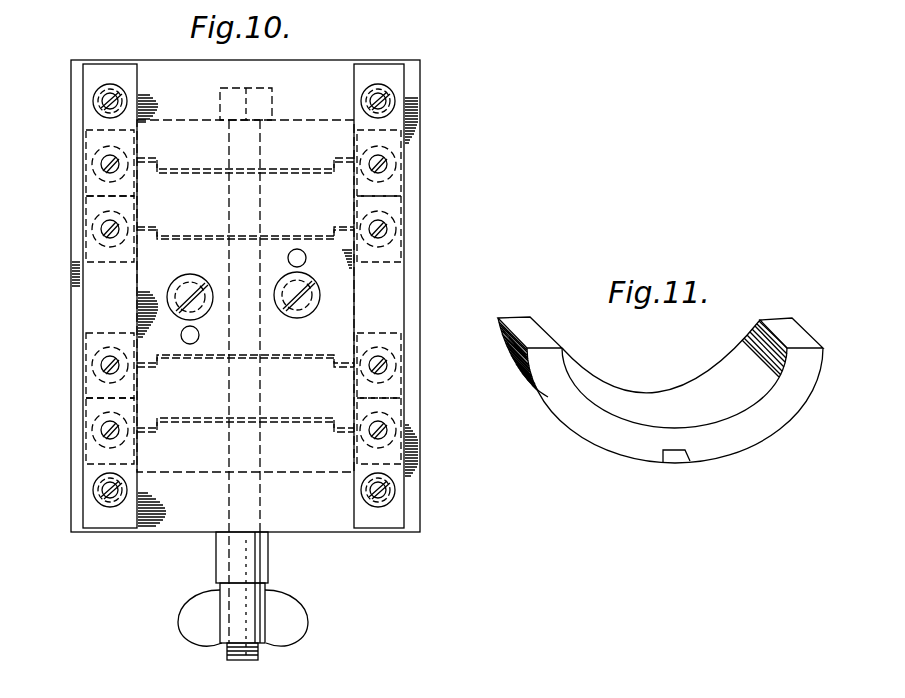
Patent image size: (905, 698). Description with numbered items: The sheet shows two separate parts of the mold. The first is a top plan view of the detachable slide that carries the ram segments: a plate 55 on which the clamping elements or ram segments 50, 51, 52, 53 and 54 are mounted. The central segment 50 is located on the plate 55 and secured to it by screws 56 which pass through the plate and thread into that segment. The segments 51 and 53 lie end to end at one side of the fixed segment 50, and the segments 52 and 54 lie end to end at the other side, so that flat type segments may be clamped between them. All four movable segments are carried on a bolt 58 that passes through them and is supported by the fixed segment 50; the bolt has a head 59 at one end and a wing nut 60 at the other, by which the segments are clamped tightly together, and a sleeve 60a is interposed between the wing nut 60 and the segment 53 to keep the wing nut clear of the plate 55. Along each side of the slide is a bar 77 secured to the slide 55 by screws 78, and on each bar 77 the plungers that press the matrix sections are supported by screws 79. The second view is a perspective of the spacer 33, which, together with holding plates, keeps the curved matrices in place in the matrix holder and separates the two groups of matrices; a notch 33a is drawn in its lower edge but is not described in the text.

In FIG. 11, the spacer 33 is at (747, 432).
In FIG. 11, the notch 33a is at (670, 457).
In FIG. 10, the central ram segment 50 is at (308, 352).
In FIG. 10, the ram segment 51 is at (195, 415).
In FIG. 10, the ram segment 52 is at (182, 178).
In FIG. 10, the end ram segment 53 is at (328, 468).
In FIG. 10, the end ram segment 54 is at (168, 122).
In FIG. 10, the plate 55 is at (167, 525).
In FIG. 10, the screws 56 is at (280, 289).
In FIG. 10, the bolt 58 is at (260, 160).
In FIG. 10, the head 59 is at (268, 102).
In FIG. 10, the wing nut 60 is at (265, 610).
In FIG. 10, the sleeve 60a is at (268, 565).
In FIG. 10, the bar 77 is at (432, 292).
In FIG. 10, the screws 78 is at (100, 97).
In FIG. 10, the screws 79 is at (108, 226).